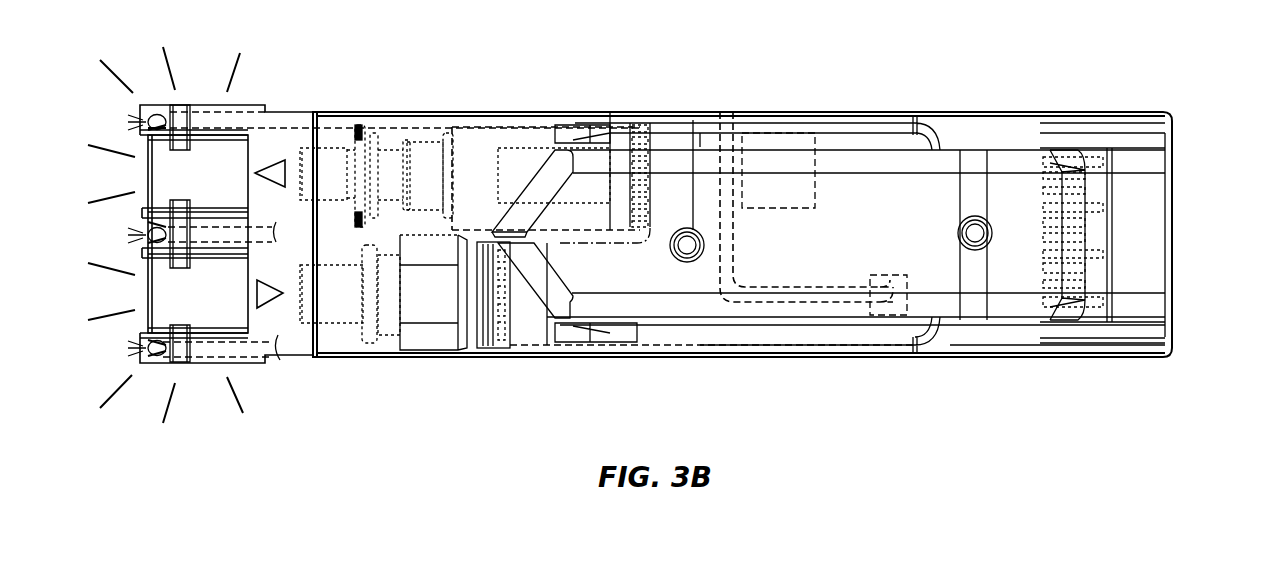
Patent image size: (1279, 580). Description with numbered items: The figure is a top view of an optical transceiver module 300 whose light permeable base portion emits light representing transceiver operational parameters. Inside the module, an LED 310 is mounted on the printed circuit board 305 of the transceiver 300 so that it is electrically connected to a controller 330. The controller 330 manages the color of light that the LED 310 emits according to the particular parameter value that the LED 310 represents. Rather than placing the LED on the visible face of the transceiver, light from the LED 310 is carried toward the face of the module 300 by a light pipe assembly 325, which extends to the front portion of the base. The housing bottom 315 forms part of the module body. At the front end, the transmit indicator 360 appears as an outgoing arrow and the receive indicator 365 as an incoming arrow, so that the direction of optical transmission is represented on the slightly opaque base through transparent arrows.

The optical transceiver module 300 is at (568, 64).
The printed circuit board 305 is at (1125, 228).
The LED 310 is at (892, 317).
The housing bottom 315 is at (825, 357).
The light pipe assembly 325 is at (784, 306).
The controller 330 is at (786, 133).
The transmit indicator 360 is at (272, 163).
The receive indicator 365 is at (281, 309).